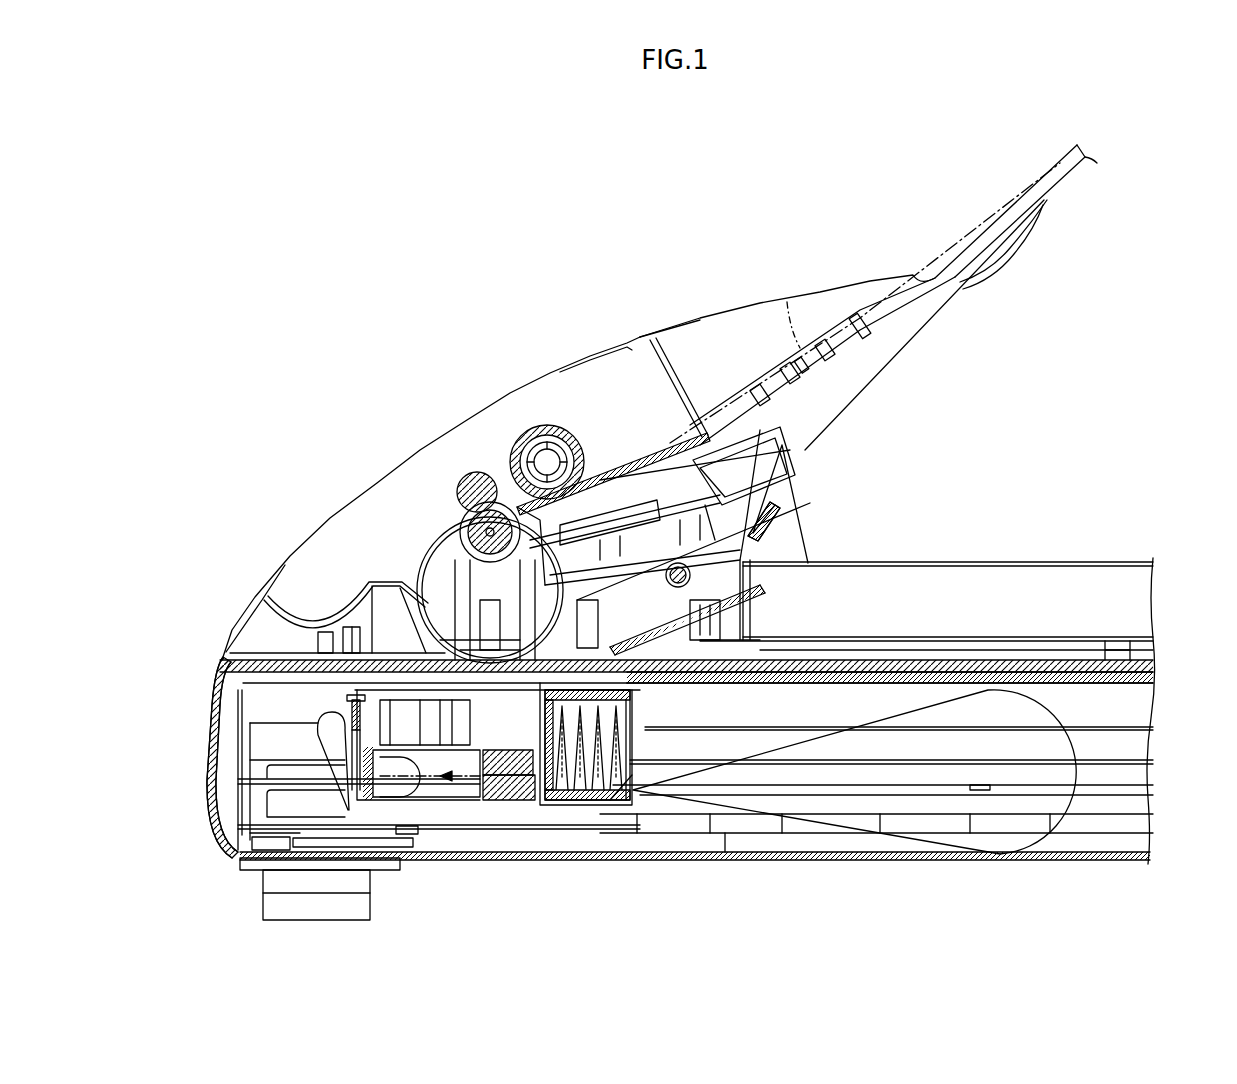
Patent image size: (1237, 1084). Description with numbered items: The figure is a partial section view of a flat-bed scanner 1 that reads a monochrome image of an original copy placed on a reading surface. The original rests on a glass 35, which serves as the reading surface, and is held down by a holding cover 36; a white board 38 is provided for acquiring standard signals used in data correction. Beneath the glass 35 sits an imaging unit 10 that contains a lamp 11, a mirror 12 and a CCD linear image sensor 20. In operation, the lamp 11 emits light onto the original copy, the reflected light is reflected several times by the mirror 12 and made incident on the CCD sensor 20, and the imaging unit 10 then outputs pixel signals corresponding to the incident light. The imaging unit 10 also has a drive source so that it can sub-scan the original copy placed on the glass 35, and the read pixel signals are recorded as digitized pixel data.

The flat-bed scanner 1 is at (198, 722).
The imaging unit 10 is at (628, 797).
The lamp 11 is at (500, 800).
The mirror 12 is at (620, 800).
The CCD linear image sensor 20 is at (413, 858).
The glass 35 is at (792, 668).
The holding cover 36 is at (946, 616).
The white board 38 is at (757, 530).